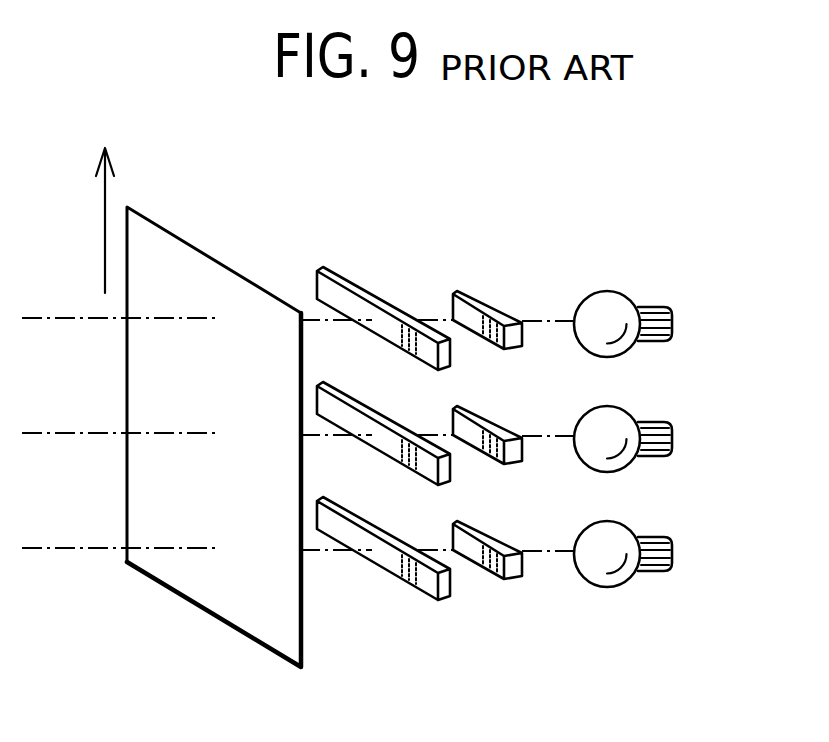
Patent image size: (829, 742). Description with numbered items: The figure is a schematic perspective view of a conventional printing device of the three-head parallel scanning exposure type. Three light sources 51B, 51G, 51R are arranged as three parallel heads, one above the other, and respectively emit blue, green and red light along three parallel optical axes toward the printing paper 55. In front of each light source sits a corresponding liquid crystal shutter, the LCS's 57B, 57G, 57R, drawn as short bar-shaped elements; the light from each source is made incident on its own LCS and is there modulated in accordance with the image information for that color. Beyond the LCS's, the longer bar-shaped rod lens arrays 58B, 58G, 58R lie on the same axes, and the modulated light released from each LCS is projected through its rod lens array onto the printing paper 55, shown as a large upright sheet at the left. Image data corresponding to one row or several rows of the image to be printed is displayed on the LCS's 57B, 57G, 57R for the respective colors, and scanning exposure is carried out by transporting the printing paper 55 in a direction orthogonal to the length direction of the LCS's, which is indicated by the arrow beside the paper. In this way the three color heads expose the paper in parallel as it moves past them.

The printing paper 55 is at (183, 257).
The rod lens array 58B is at (333, 275).
The rod lens array 58G is at (353, 424).
The rod lens array 58R is at (419, 595).
The LCS 57B is at (476, 296).
The LCS 57G is at (503, 425).
The LCS 57R is at (512, 583).
The light source 51B is at (623, 302).
The light source 51G is at (625, 440).
The light source 51R is at (625, 555).